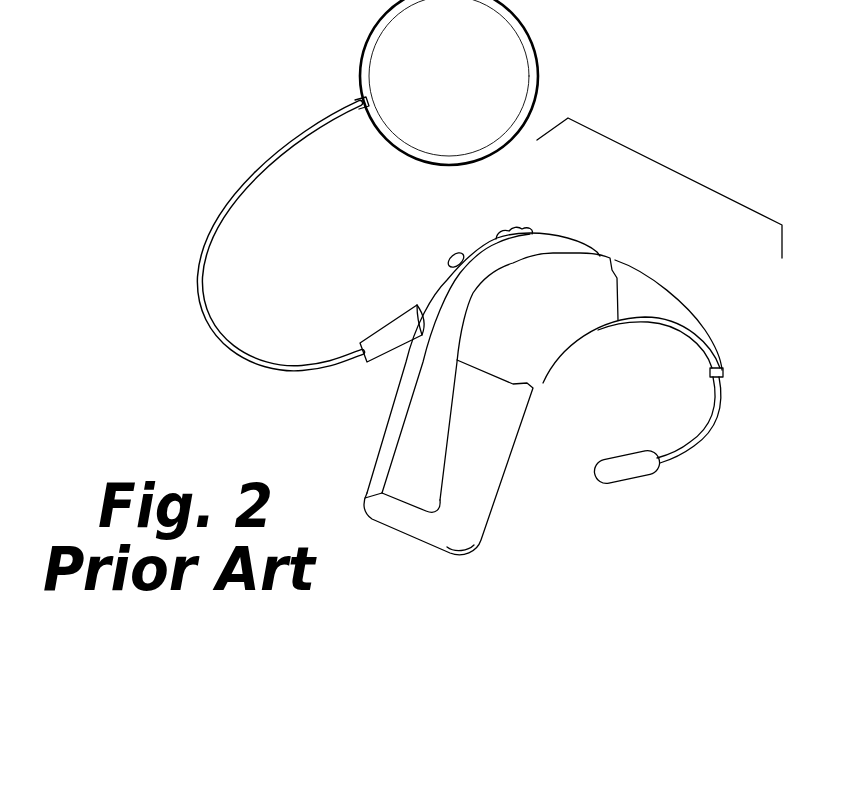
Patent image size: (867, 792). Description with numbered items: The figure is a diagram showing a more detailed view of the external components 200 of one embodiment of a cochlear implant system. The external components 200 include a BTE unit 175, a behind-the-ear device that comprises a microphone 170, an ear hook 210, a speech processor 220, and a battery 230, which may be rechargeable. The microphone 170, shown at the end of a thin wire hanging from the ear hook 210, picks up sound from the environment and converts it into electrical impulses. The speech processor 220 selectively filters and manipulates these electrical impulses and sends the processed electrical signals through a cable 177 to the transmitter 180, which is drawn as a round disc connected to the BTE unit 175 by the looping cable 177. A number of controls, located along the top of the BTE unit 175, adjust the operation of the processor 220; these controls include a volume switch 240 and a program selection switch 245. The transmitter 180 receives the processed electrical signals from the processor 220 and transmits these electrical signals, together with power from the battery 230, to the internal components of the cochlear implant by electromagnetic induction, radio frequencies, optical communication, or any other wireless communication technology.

The microphone 170 is at (653, 472).
The BTE unit 175 is at (678, 170).
The cable 177 is at (258, 165).
The transmitter 180 is at (525, 47).
The external components 200 is at (152, 267).
The ear hook 210 is at (647, 267).
The speech processor 220 is at (557, 357).
The battery 230 is at (488, 523).
The volume switch 240 is at (530, 228).
The program selection switch 245 is at (452, 256).